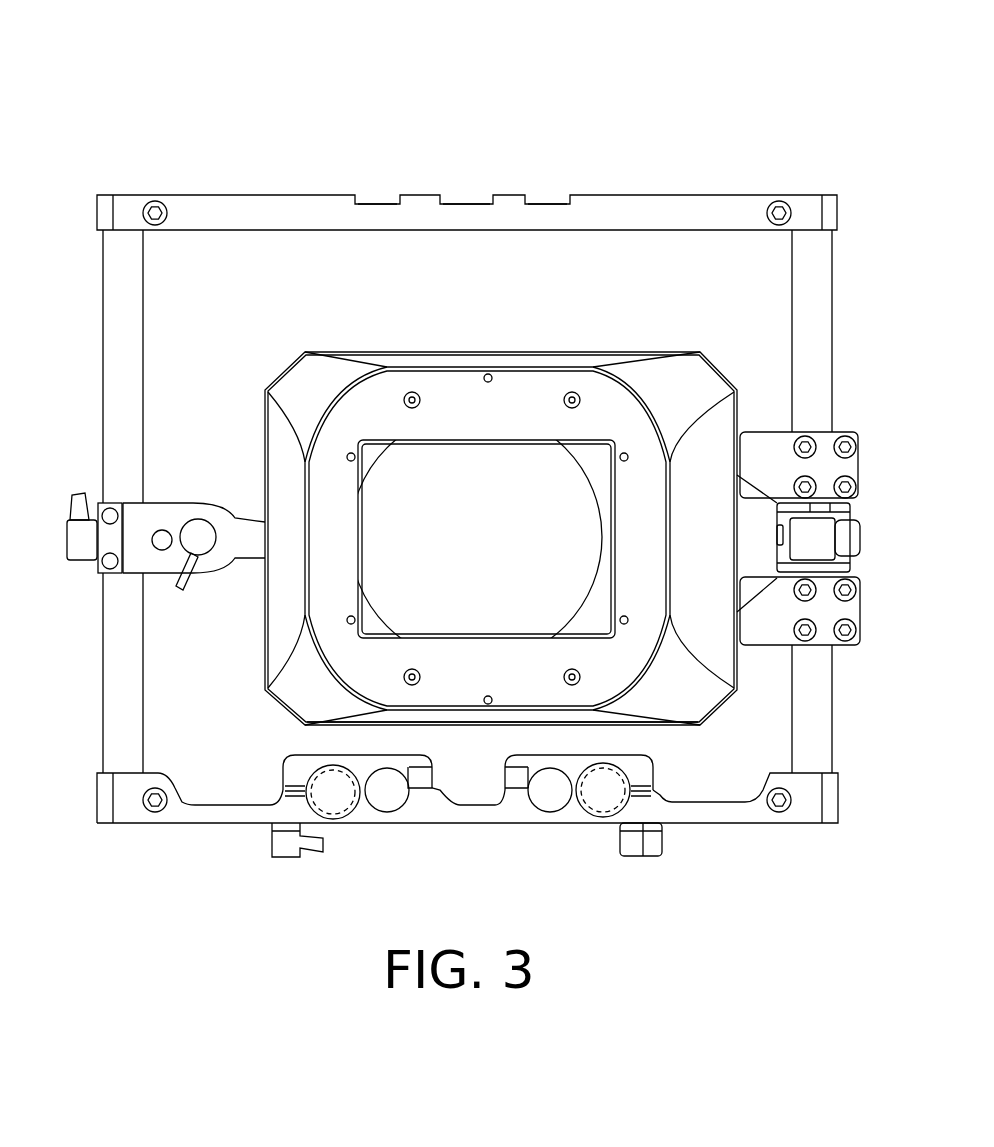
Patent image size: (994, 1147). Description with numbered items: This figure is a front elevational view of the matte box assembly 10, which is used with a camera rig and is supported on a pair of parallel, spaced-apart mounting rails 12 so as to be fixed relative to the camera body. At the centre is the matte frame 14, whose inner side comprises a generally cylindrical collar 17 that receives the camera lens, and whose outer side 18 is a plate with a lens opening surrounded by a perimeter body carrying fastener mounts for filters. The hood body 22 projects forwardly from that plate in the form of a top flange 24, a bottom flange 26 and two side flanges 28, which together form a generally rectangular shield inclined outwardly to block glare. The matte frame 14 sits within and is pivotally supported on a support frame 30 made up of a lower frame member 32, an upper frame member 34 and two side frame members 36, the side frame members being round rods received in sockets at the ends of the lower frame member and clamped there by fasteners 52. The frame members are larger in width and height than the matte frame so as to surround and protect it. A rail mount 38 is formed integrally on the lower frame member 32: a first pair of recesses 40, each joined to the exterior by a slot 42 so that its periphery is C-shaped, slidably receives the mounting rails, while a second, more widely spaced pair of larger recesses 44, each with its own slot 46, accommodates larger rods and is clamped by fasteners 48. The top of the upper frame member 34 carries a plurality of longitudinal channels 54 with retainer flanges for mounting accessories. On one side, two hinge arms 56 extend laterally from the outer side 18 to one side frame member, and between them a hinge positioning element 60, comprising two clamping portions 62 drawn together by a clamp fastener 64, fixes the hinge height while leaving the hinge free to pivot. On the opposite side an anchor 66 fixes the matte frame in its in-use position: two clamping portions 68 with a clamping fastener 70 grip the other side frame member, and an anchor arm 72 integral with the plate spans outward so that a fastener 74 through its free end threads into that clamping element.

The matte box assembly 10 is at (350, 70).
The mounting rails 12 is at (338, 817).
The matte frame 14 is at (612, 318).
The collar 17 is at (585, 472).
The outer side 18 is at (460, 400).
The hood body 22 is at (326, 345).
The top flange 24 is at (530, 360).
The bottom flange 26 is at (468, 735).
The side flanges 28 is at (278, 443).
The support frame 30 is at (203, 183).
The lower frame member 32 is at (210, 824).
The upper frame member 34 is at (256, 203).
The side frame members 36 is at (140, 290).
The rail mount 38 is at (250, 755).
The first pair of recesses 40 is at (392, 812).
The slot 42 is at (420, 790).
The second pair of recesses 44 is at (327, 770).
The slot 46 is at (290, 791).
The fasteners 48 is at (273, 856).
The fasteners 52 is at (150, 200).
The channels 54 is at (473, 200).
The hinge arms 56 is at (765, 440).
The hinge positioning element 60 is at (873, 492).
The clamping portions 62 is at (808, 565).
The clamp fastener 64 is at (840, 533).
The anchor 66 is at (168, 446).
The clamping portions 68 is at (100, 558).
The clamping fastener 70 is at (75, 537).
The anchor arm 72 is at (230, 548).
The fastener 74 is at (205, 552).